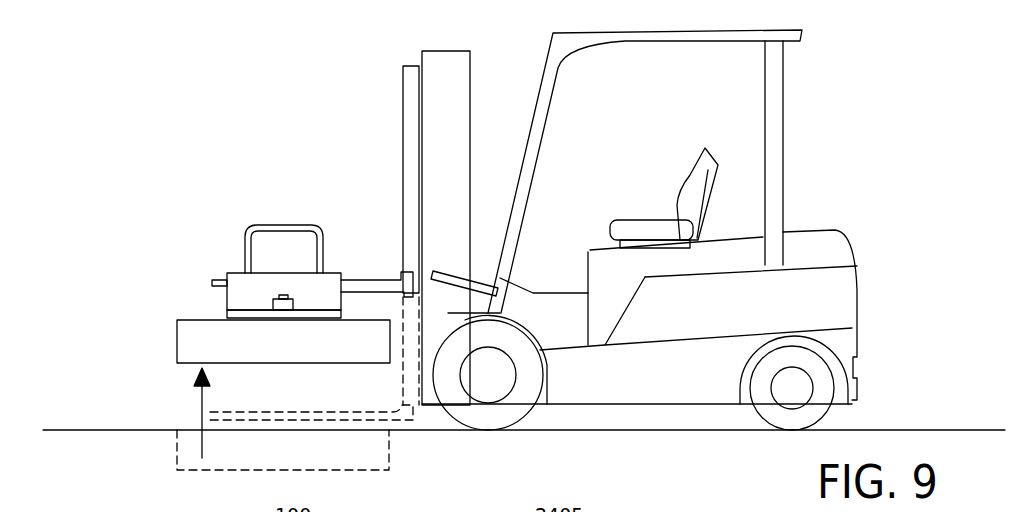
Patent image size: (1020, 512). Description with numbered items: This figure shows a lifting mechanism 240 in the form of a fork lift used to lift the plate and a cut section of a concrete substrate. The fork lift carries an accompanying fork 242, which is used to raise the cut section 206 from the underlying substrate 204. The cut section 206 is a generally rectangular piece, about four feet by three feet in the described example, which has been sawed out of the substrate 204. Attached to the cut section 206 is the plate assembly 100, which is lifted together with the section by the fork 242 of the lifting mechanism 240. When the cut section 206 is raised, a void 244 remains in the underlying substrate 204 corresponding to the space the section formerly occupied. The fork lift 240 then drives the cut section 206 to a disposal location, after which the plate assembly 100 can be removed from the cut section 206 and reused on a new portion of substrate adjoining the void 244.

The plate assembly 100 is at (216, 245).
The substrate 204 is at (78, 430).
The cut section 206 is at (197, 322).
The lifting mechanism 240 is at (832, 84).
The fork 242 is at (362, 280).
The void 244 is at (184, 426).